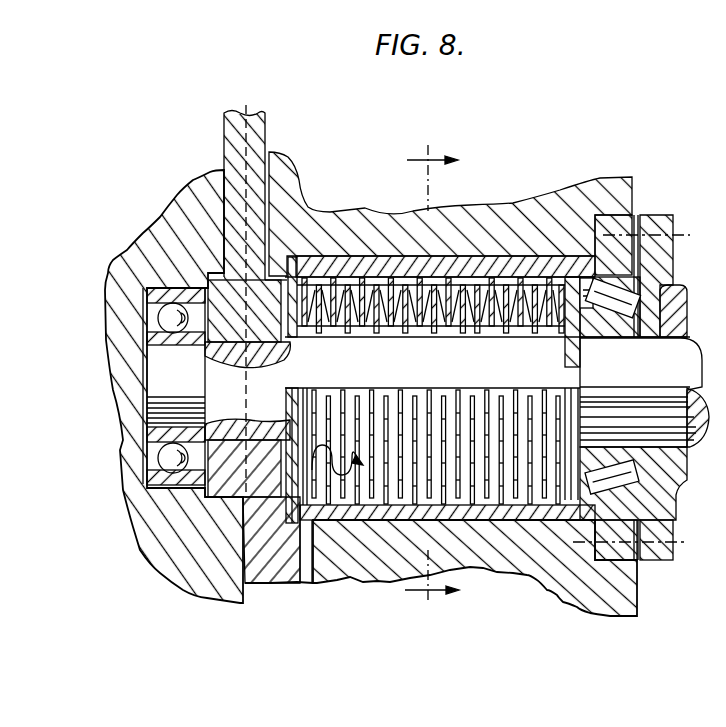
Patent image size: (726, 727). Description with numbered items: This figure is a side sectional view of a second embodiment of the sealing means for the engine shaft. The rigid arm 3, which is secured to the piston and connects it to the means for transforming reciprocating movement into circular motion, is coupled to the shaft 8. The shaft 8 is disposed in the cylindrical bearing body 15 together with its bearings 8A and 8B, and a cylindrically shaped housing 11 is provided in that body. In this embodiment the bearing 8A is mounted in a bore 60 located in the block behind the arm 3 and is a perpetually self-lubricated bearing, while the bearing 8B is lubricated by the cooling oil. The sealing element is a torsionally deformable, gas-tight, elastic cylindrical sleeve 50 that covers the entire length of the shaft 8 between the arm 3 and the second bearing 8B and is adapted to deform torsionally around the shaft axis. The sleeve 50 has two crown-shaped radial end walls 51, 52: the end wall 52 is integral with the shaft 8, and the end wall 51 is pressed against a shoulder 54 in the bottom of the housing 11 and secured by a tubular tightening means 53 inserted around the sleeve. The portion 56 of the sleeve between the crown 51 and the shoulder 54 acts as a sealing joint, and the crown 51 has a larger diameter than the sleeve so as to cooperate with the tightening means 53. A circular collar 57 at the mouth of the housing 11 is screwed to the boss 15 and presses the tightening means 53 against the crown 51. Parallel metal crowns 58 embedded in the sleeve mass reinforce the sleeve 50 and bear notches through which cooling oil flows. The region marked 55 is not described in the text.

The rigid arm 3 is at (224, 141).
The shaft 8 is at (452, 362).
The bearing 8A is at (147, 483).
The bearing 8B is at (680, 507).
The housing 11 is at (459, 272).
The cylindrical bearing body 15 is at (581, 582).
The cylindrical sleeve 50 is at (505, 256).
The end wall 51 is at (302, 257).
The end wall 52 is at (563, 278).
The tightening means 53 is at (487, 517).
The shoulder 54 is at (278, 258).
The hub 55 is at (330, 328).
The sealing joint 56 is at (273, 518).
The circular collar 57 is at (633, 193).
The parallel metal crowns 58 is at (384, 272).
The bore 60 is at (137, 278).